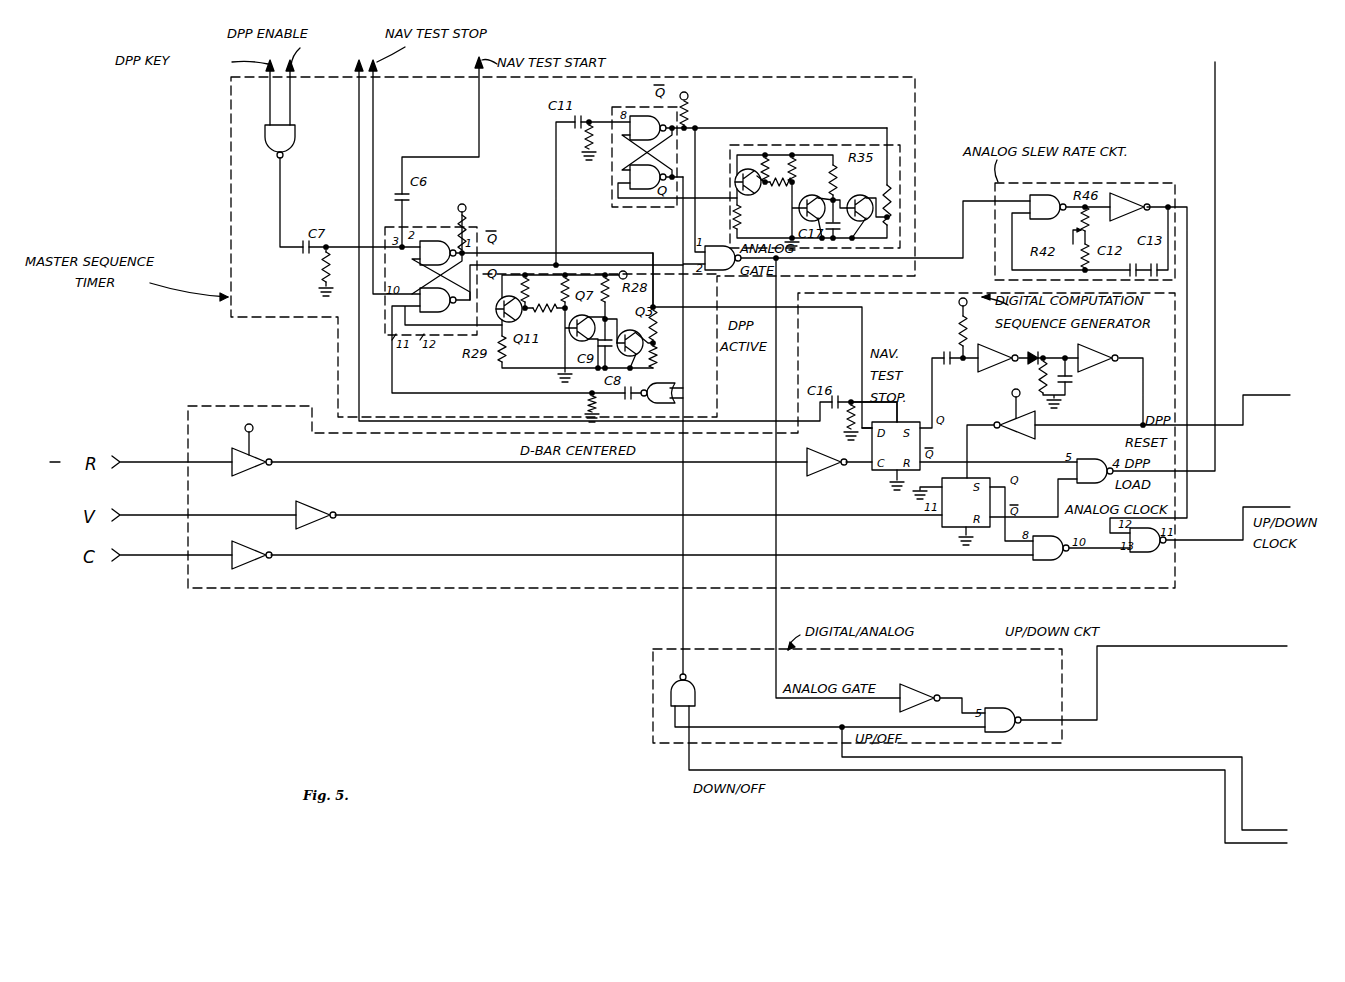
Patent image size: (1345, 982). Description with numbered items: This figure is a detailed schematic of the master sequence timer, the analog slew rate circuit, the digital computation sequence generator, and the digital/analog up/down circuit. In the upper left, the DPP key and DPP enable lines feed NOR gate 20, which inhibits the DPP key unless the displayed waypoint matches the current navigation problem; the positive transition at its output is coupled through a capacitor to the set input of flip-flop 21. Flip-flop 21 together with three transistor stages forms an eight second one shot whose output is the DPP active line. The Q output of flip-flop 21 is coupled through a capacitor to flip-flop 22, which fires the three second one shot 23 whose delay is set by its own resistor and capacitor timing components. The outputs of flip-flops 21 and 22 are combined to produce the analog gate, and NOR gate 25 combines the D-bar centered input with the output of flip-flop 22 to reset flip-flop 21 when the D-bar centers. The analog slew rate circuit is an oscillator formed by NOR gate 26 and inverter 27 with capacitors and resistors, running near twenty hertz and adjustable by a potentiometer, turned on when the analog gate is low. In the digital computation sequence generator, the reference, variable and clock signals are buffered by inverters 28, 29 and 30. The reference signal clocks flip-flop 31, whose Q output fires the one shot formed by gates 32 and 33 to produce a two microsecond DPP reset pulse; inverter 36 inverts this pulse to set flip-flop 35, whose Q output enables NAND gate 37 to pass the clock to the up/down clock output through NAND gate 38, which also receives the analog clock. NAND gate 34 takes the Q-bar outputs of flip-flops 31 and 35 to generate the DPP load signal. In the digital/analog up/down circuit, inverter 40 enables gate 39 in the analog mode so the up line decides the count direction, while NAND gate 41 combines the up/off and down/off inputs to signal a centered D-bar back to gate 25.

The NOR gate 20 is at (272, 140).
The flip-flop 21 is at (478, 226).
The flip-flop 22 is at (614, 106).
The one shot 23 is at (737, 145).
The NOR gate 25 is at (676, 392).
The NOR gate 26 is at (1044, 200).
The inverter 27 is at (1118, 204).
The inverter 28 is at (250, 470).
The inverter 29 is at (314, 524).
The inverter 30 is at (250, 563).
The flip-flop 31 is at (872, 446).
The gate 32 is at (992, 356).
The gate 33 is at (1092, 356).
The NAND gate 34 is at (1090, 462).
The flip-flop 35 is at (950, 527).
The inverter 36 is at (1012, 430).
The NAND gate 37 is at (1042, 560).
The NAND gate 38 is at (1140, 553).
The gate 39 is at (1000, 708).
The inverter 40 is at (908, 690).
The NAND gate 41 is at (694, 692).